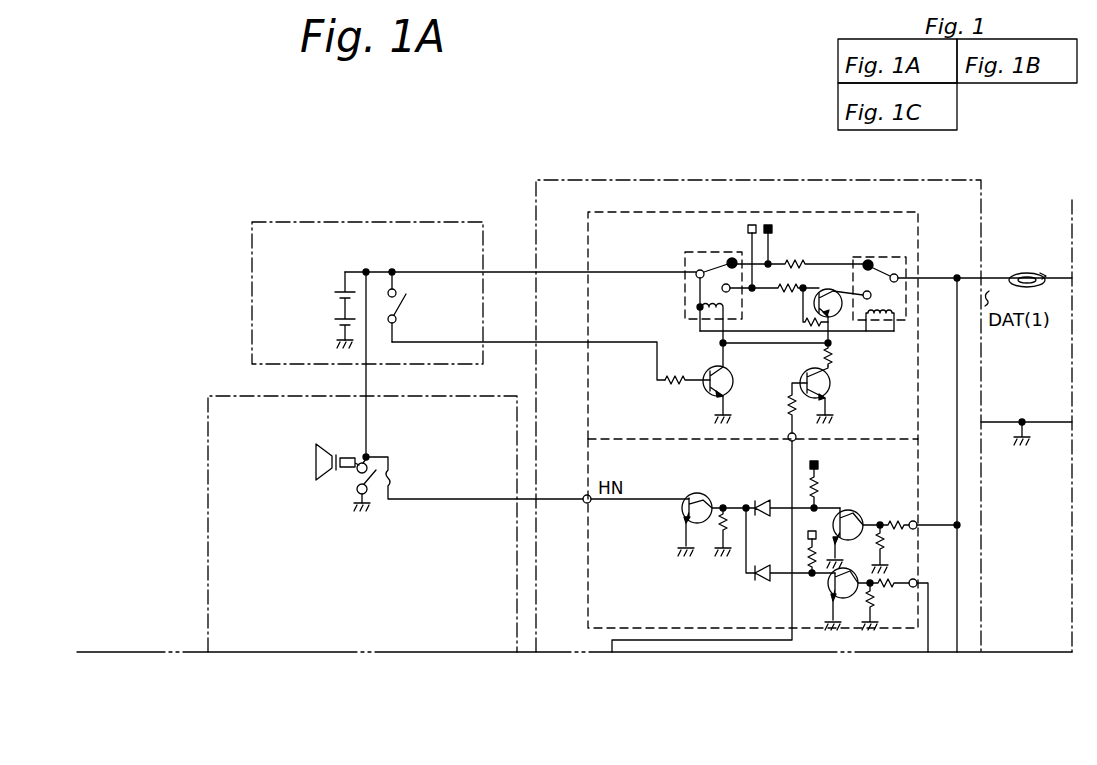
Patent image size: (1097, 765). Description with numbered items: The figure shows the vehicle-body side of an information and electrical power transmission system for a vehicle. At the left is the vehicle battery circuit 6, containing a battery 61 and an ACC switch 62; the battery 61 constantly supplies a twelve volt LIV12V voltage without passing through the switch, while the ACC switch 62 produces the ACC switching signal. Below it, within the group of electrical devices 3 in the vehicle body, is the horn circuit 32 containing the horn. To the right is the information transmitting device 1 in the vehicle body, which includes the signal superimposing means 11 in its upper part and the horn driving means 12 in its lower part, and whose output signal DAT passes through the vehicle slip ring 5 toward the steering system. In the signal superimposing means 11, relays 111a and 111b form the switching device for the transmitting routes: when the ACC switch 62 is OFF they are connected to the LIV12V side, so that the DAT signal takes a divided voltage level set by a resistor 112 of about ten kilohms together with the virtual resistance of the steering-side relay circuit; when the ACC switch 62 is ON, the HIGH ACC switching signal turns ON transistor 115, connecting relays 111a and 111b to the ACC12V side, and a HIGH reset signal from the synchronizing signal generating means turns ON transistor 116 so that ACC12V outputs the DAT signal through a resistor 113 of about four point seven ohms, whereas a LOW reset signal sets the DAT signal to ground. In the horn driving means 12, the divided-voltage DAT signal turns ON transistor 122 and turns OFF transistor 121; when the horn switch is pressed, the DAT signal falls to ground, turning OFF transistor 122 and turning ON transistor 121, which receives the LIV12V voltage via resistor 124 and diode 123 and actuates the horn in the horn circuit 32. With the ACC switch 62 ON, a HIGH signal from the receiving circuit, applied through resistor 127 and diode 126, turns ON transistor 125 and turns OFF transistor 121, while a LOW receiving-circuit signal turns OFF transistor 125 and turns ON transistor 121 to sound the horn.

The information transmitting device 1 is at (643, 180).
The group of electrical devices 3 is at (206, 621).
The vehicle slip ring 5 is at (1025, 272).
The vehicle battery circuit 6 is at (352, 222).
The signal superimposing means 11 is at (581, 212).
The horn driving means 12 is at (776, 545).
The horn circuit 32 is at (292, 382).
The battery 61 is at (337, 309).
The ACC switch 62 is at (402, 292).
The relay 111a is at (684, 288).
The relay 111b is at (886, 260).
The resistor 112 is at (794, 264).
The resistor 113 is at (792, 296).
The transistor 115 is at (733, 380).
The transistor 116 is at (831, 385).
The transistor 121 is at (693, 493).
The transistor 122 is at (851, 509).
The diode 123 is at (760, 501).
The resistor 124 is at (820, 480).
The transistor 125 is at (830, 593).
The diode 126 is at (760, 580).
The resistor 127 is at (807, 553).